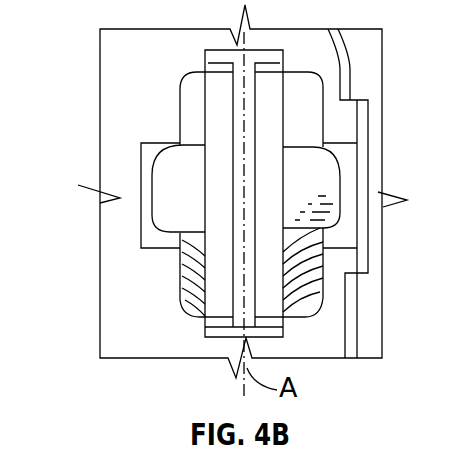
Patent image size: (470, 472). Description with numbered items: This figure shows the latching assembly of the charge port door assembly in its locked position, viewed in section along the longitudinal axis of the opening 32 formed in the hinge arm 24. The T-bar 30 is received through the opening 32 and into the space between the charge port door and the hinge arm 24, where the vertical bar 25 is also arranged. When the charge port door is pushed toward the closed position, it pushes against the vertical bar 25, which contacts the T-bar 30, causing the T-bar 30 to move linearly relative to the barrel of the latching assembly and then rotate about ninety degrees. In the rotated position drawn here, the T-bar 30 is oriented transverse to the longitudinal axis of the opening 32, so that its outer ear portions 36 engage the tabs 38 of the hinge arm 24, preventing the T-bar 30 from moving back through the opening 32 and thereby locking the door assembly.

The hinge arm 24 is at (121, 272).
The vertical bar 25 is at (221, 258).
The T-bar 30 is at (334, 181).
The opening 32 is at (318, 93).
The outer ear portions 36 is at (162, 195).
The tabs 38 is at (143, 158).